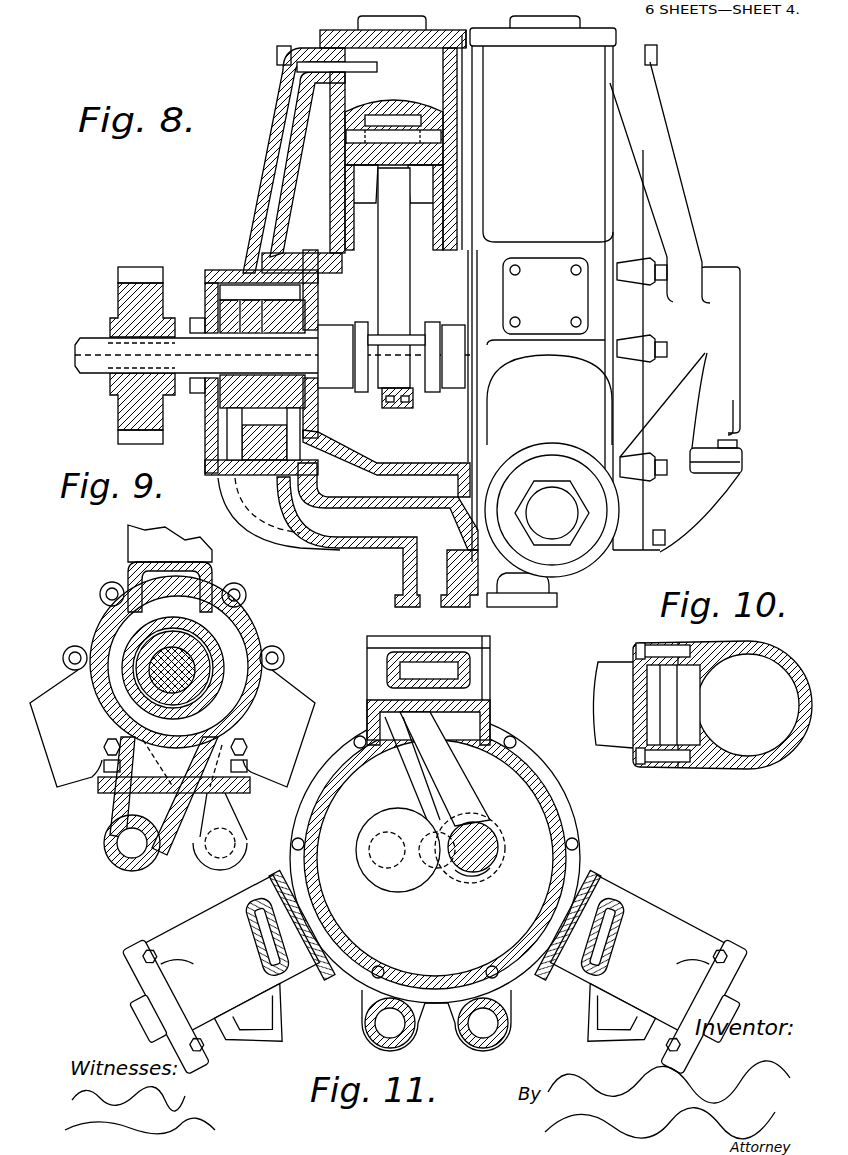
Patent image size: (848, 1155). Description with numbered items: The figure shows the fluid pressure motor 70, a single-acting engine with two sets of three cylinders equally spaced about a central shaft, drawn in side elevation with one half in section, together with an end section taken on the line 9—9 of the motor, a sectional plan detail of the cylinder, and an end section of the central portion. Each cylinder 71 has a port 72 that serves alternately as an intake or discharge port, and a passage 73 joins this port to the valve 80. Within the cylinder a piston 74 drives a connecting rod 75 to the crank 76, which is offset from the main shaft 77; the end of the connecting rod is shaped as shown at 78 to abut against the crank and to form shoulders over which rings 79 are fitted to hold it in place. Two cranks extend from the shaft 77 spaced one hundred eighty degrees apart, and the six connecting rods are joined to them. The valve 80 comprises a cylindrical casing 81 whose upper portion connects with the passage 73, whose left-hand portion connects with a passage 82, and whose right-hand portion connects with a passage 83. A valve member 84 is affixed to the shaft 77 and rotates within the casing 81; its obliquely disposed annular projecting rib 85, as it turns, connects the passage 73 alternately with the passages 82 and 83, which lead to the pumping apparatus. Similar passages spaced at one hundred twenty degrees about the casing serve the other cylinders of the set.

In FIG. 8, the section line 9— 9 is at (257, 197).
In FIG. 8, the fluid pressure motor 70 is at (627, 153).
In FIG. 8, the cylinder 71 is at (424, 66).
In FIG. 10, the cylinder 71 is at (763, 730).
In FIG. 8, the port 72 is at (305, 44).
In FIG. 10, the port 72 is at (685, 697).
In FIG. 8, the passage 73 is at (274, 173).
In FIG. 10, the passage 73 is at (652, 697).
In FIG. 11, the passage 73 is at (440, 670).
In FIG. 8, the piston 74 is at (417, 103).
In FIG. 8, the connecting rod 75 is at (393, 278).
In FIG. 11, the connecting rod 75 is at (460, 775).
In FIG. 8, the crank 76 is at (387, 355).
In FIG. 11, the crank 76 is at (482, 880).
In FIG. 8, the main shaft 77 is at (97, 357).
In FIG. 9, the main shaft 77 is at (172, 670).
In FIG. 11, the main shaft 77 is at (420, 837).
In FIG. 8, the connecting rod end 78 is at (418, 328).
In FIG. 11, the connecting rod end 78 is at (500, 827).
In FIG. 8, the rings 79 is at (363, 330).
In FIG. 11, the rings 79 is at (493, 833).
In FIG. 8, the valve 80 is at (225, 270).
In FIG. 8, the cylindrical casing 81 is at (210, 422).
In FIG. 8, the passage 82 is at (297, 527).
In FIG. 9, the passage 82 is at (210, 803).
In FIG. 8, the passage 83 is at (300, 490).
In FIG. 9, the passage 83 is at (106, 853).
In FIG. 8, the valve member 84 is at (240, 303).
In FIG. 9, the valve member 84 is at (173, 668).
In FIG. 8, the annular projecting rib 85 is at (296, 264).